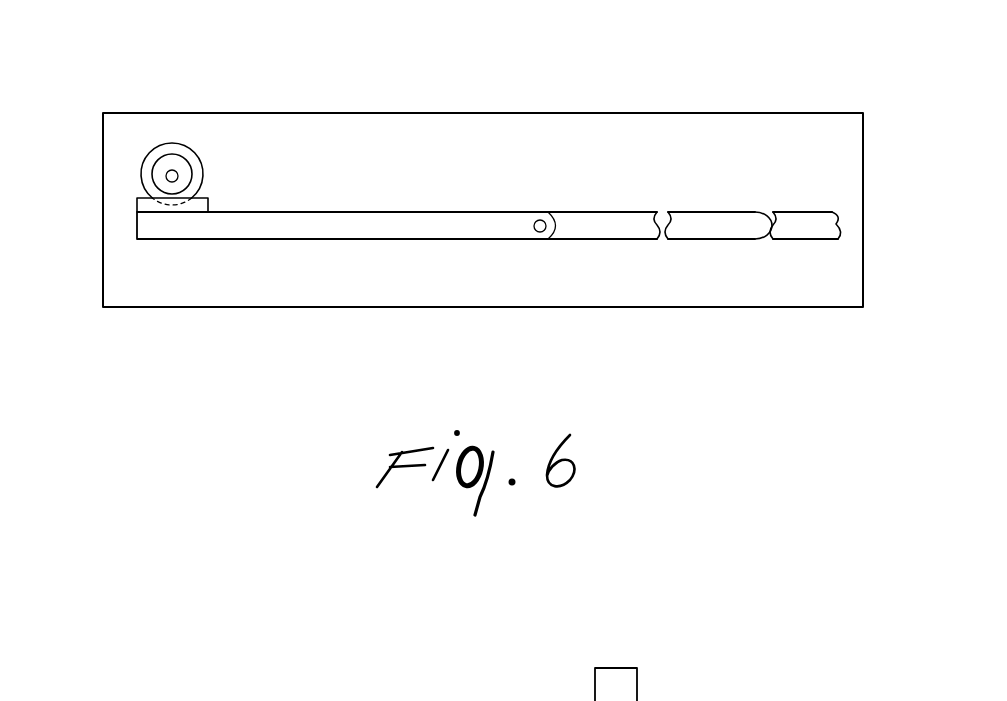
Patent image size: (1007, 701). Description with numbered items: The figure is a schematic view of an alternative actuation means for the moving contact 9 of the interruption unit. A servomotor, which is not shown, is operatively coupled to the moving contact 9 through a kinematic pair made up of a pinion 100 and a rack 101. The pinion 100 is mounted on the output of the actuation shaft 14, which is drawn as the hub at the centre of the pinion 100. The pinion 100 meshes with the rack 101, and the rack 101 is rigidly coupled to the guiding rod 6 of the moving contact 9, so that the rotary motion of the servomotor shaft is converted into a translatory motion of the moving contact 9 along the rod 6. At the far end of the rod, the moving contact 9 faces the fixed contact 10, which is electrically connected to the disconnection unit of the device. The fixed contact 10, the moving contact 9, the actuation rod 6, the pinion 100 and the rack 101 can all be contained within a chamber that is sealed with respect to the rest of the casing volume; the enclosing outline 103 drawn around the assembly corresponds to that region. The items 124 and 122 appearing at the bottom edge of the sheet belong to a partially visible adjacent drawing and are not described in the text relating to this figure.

The housing 103 is at (432, 113).
The pinion 100 is at (162, 158).
The actuation shaft 14 is at (181, 172).
The rack 101 is at (133, 215).
The guiding rod 6 is at (284, 242).
The moving contact 9 is at (724, 207).
The fixed contact 10 is at (809, 248).
The block 124 is at (595, 697).
The element 122 is at (762, 688).